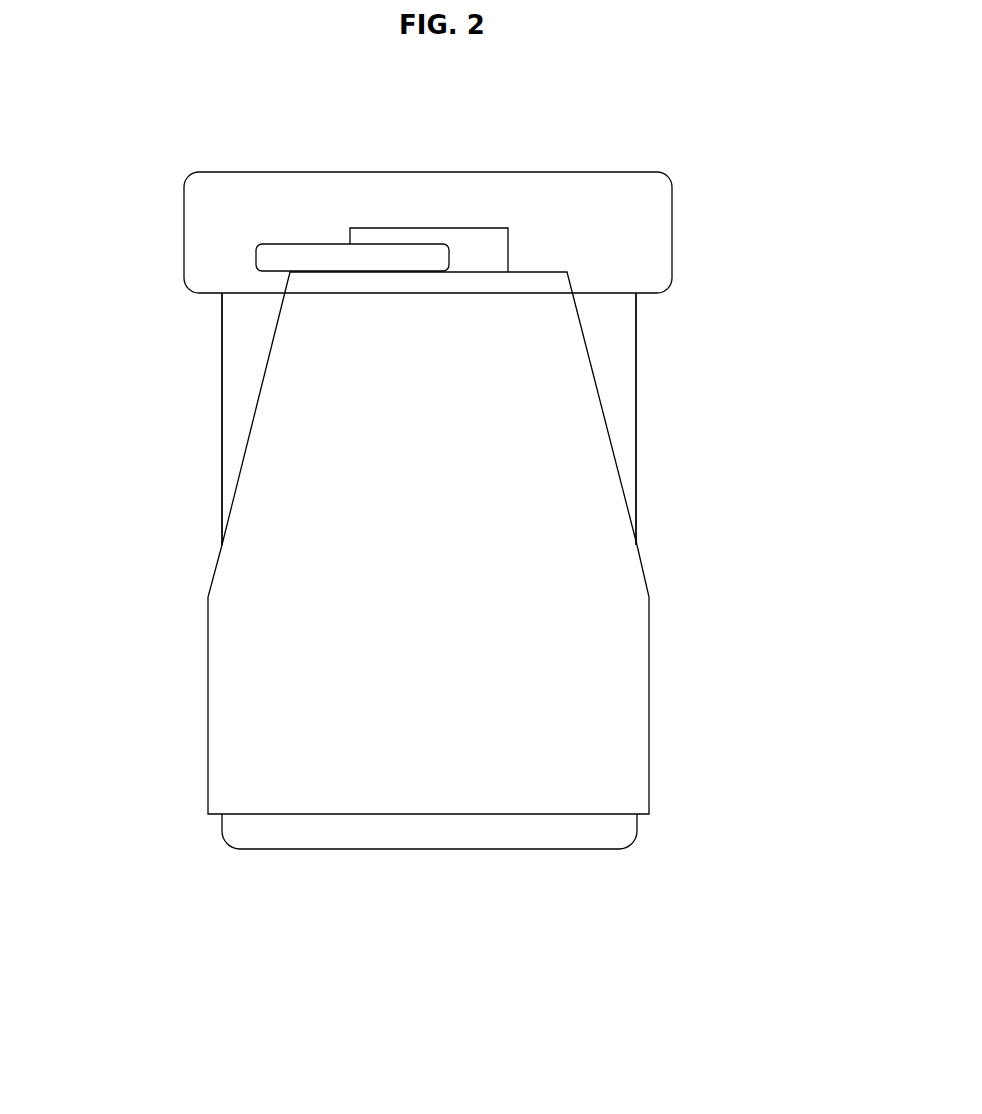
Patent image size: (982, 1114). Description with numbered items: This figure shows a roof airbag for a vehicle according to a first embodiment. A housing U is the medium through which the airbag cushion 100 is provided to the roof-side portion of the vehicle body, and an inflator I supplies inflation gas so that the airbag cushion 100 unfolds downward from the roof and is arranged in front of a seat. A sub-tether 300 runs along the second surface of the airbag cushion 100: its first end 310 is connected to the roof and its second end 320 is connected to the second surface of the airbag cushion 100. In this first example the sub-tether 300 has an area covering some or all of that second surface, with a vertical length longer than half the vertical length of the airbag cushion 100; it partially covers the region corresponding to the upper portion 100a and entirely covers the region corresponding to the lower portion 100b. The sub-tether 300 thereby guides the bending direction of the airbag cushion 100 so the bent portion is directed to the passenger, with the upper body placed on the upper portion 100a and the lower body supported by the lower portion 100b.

The housing U is at (588, 193).
The inflator I is at (395, 257).
The airbag cushion 100 is at (640, 428).
The upper portion of the airbag cushion 100a is at (617, 353).
The lower portion of the airbag cushion 100b is at (548, 830).
The sub-tether 300 is at (431, 543).
The first end of the sub-tether 310 is at (318, 326).
The second end of the sub-tether 320 is at (235, 610).